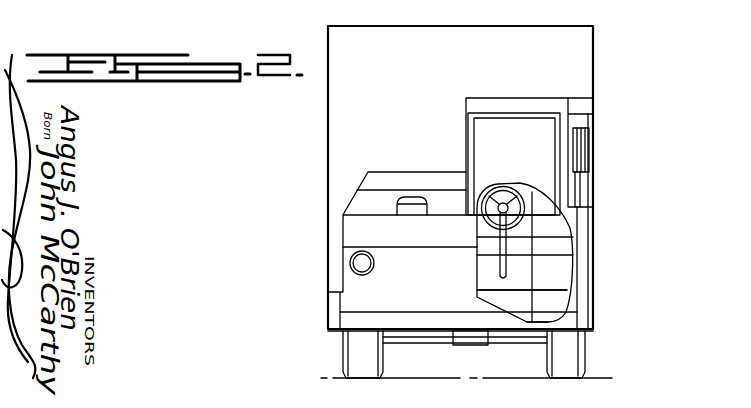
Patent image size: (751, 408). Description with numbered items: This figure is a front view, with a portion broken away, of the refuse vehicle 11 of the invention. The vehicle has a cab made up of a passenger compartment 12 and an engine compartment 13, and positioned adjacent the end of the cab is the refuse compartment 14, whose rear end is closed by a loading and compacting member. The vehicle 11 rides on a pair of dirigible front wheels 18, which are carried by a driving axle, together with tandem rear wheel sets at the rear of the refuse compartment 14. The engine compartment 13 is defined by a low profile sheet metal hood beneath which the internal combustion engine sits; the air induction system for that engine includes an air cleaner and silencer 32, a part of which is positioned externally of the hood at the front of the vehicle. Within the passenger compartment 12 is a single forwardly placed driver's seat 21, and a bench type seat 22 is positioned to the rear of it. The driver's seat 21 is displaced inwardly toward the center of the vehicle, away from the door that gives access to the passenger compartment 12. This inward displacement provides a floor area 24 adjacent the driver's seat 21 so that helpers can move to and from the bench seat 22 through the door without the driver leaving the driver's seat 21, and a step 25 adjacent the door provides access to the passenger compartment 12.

The refuse vehicle 11 is at (320, 200).
The passenger compartment 12 is at (514, 96).
The engine compartment 13 is at (379, 213).
The refuse compartment 14 is at (456, 62).
The dirigible front wheels 18 is at (362, 349).
The driver's seat 21 is at (487, 250).
The bench type seat 22 is at (557, 242).
The floor area 24 is at (553, 289).
The step 25 is at (545, 320).
The air cleaner and silencer 32 is at (412, 197).